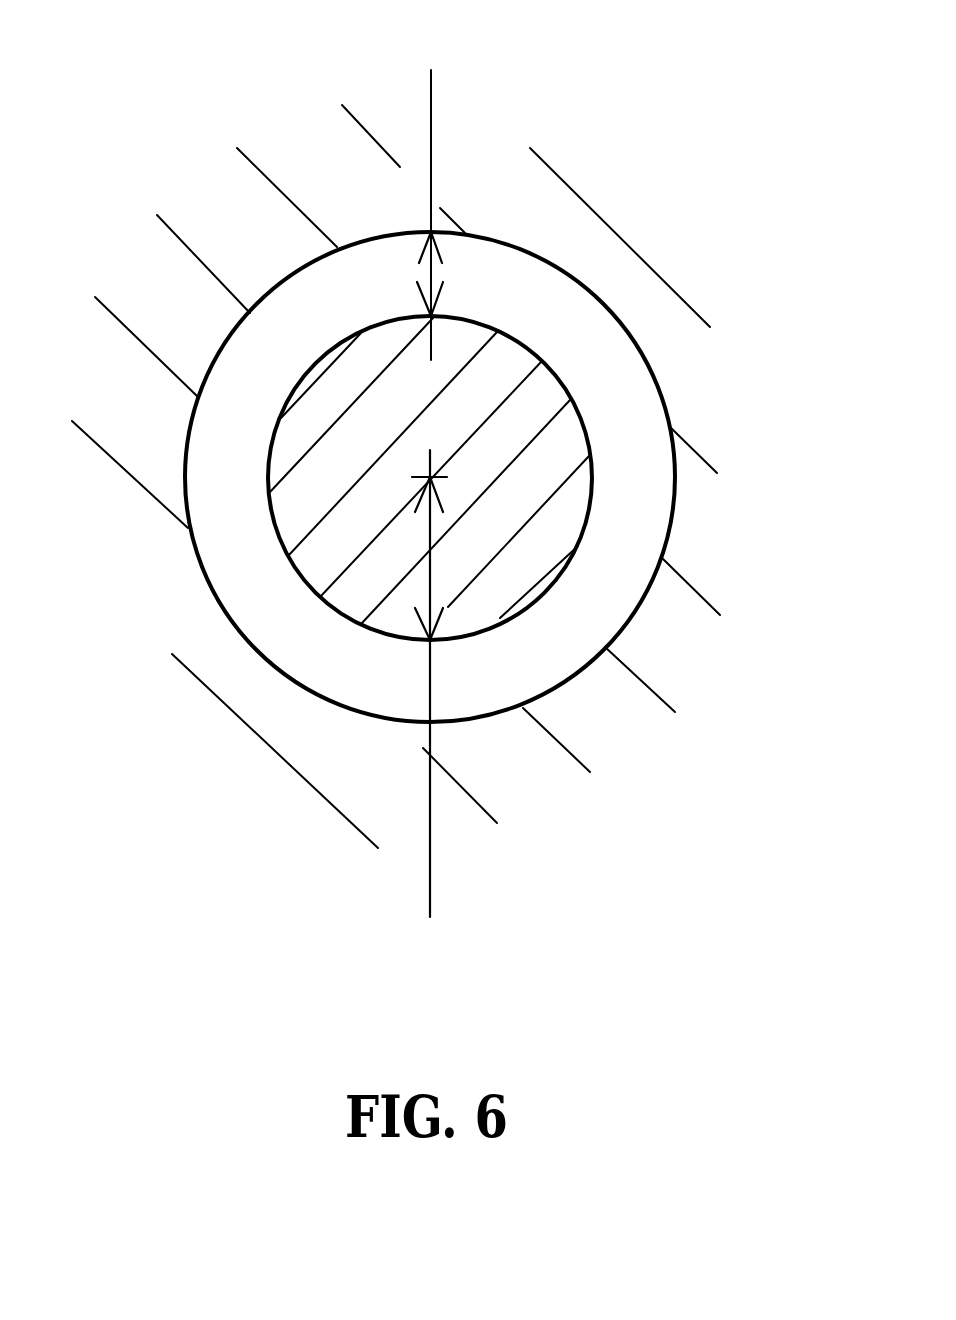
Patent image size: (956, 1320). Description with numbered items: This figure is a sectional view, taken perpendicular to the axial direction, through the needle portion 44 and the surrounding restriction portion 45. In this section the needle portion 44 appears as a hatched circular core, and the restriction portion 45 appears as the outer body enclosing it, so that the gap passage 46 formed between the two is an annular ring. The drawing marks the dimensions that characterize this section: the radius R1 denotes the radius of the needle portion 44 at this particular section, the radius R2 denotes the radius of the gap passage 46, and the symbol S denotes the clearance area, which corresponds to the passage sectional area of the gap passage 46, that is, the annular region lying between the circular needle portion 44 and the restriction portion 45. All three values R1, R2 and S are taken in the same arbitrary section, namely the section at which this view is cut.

The needle portion 44 is at (550, 436).
The restriction portion 45 is at (232, 213).
The gap passage 46 is at (198, 551).
The clearance area S is at (248, 448).
The radius of the needle portion R1 is at (425, 713).
The radius of the gap passage R2 is at (429, 180).